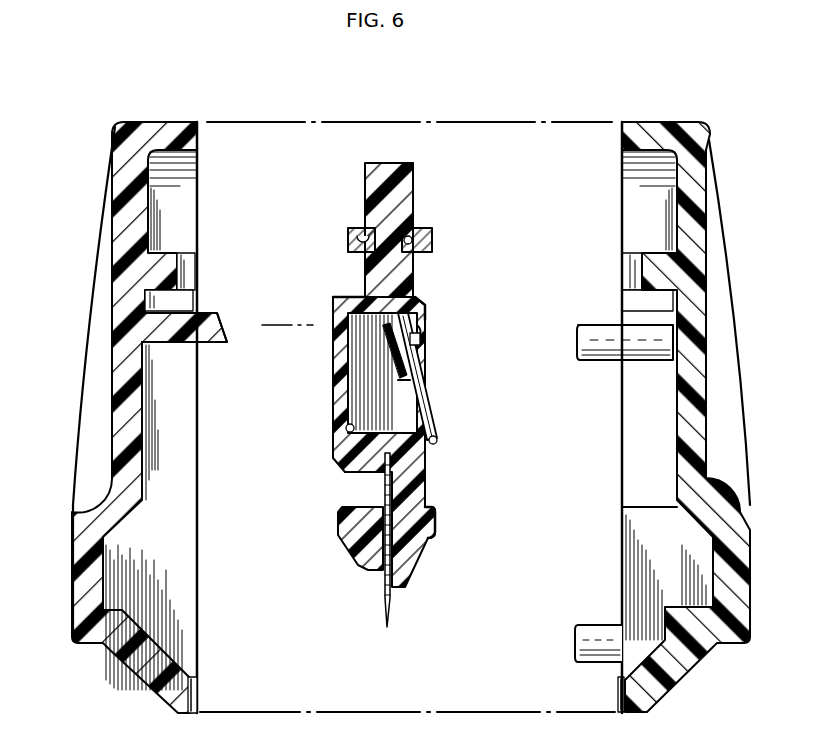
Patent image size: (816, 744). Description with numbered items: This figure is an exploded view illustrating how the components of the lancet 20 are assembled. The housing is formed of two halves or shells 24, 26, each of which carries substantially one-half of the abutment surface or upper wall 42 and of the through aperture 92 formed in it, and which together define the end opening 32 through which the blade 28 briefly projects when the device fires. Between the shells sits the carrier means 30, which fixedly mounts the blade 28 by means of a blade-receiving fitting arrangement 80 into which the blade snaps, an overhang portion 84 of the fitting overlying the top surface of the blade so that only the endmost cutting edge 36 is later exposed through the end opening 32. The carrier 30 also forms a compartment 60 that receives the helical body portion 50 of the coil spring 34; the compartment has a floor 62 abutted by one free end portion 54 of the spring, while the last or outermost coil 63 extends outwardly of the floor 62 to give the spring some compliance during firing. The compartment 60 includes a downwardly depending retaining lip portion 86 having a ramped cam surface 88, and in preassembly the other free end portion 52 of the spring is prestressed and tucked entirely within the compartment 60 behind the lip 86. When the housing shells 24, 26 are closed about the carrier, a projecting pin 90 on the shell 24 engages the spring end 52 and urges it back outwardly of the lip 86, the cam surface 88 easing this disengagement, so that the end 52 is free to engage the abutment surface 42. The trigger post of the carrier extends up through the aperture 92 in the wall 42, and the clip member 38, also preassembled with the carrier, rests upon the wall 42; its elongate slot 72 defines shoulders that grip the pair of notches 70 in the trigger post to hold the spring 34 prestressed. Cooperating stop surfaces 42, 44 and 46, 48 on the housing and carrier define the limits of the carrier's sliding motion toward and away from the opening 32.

The lancet 20 is at (108, 117).
The housing half 24 is at (137, 678).
The housing half 26 is at (660, 685).
The blade 28 is at (385, 488).
The carrier means 30 is at (327, 303).
The end opening 32 is at (193, 688).
The coil spring 34 is at (400, 380).
The cutting edge 36 is at (365, 163).
The clip member 38 is at (427, 227).
The abutment surface 42 is at (163, 297).
The stop surface 44 is at (362, 290).
The stop surface 46 is at (653, 637).
The stop surface 48 is at (428, 538).
The helical body portion 50 is at (380, 363).
The free end portion 52 is at (417, 340).
The free end portion 54 is at (347, 427).
The compartment 60 is at (407, 353).
The floor 62 is at (427, 420).
The outermost coil 63 is at (437, 440).
The notches 70 is at (360, 232).
The elongate slot 72 is at (410, 245).
The blade-receiving fitting arrangement 80 is at (338, 530).
The overhang portion 84 is at (385, 478).
The retaining lip portion 86 is at (427, 302).
The cam surface 88 is at (417, 332).
The projecting pin 90 is at (217, 345).
The aperture 92 is at (183, 272).